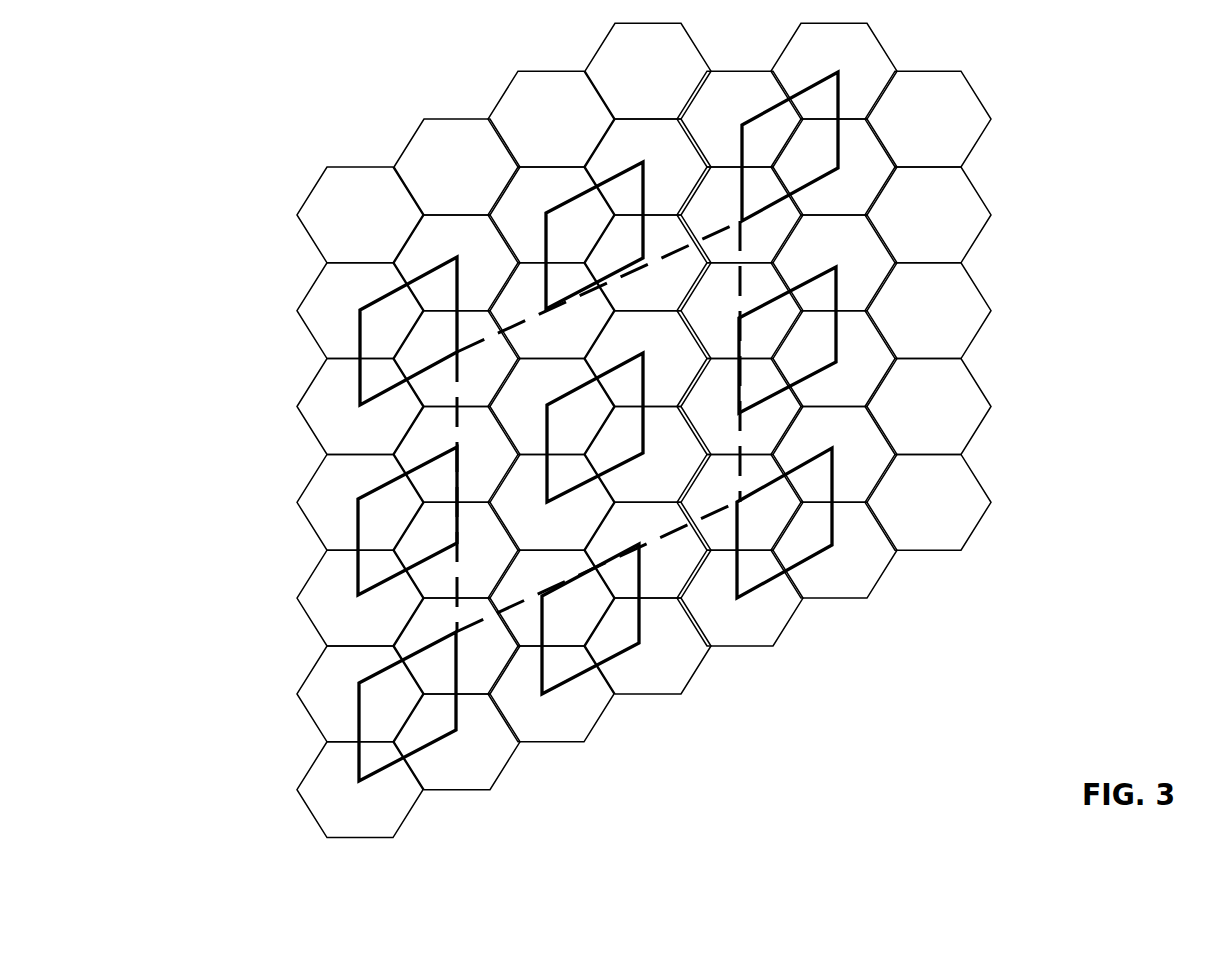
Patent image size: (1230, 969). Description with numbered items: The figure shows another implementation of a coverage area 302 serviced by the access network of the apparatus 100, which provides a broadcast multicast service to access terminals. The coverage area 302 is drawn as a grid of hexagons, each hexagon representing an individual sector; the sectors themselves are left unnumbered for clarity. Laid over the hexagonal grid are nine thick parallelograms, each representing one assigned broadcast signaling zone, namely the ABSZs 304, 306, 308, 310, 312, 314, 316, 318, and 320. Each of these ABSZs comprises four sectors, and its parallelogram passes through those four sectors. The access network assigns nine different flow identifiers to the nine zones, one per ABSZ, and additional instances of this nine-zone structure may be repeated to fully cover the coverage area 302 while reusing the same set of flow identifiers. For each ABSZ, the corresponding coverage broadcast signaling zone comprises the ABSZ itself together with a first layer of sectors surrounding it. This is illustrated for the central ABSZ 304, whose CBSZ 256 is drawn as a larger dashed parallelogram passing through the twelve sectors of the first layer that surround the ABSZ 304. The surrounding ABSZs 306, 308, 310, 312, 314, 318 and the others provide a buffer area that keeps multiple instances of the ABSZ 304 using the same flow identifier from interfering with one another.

The apparatus 100 is at (1147, 716).
The coverage broadcast signaling zone 256 is at (737, 440).
The coverage area 302 is at (1107, 200).
The assigned broadcast signaling zone 304 is at (621, 463).
The assigned broadcast signaling zone 306 is at (422, 278).
The assigned broadcast signaling zone 308 is at (580, 198).
The assigned broadcast signaling zone 310 is at (840, 135).
The assigned broadcast signaling zone 312 is at (836, 327).
The assigned broadcast signaling zone 314 is at (800, 565).
The assigned broadcast signaling zone 316 is at (613, 658).
The assigned broadcast signaling zone 318 is at (447, 733).
The assigned broadcast signaling zone 320 is at (381, 483).